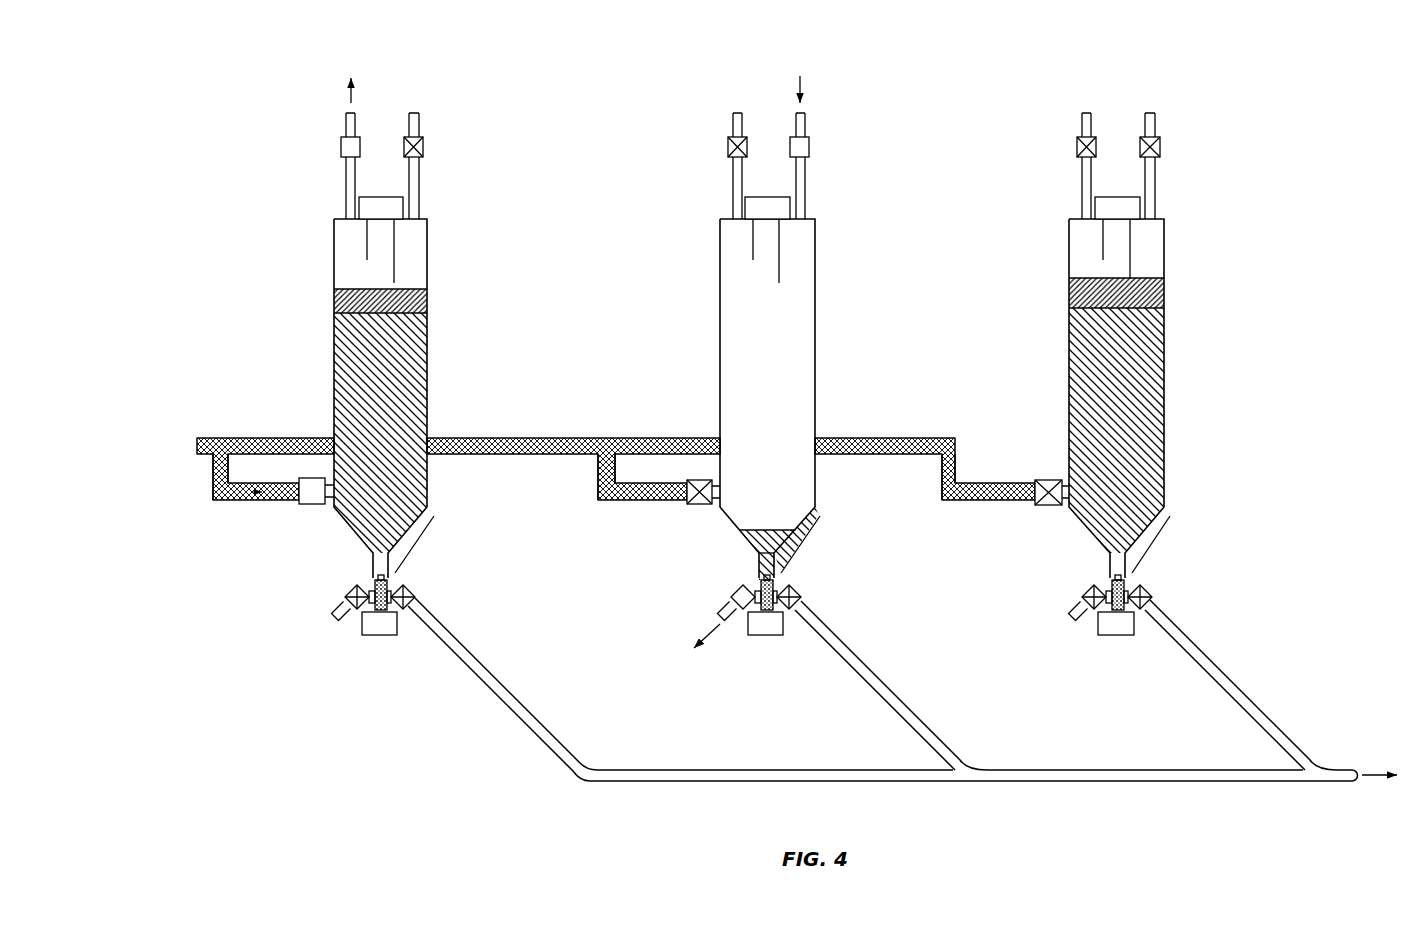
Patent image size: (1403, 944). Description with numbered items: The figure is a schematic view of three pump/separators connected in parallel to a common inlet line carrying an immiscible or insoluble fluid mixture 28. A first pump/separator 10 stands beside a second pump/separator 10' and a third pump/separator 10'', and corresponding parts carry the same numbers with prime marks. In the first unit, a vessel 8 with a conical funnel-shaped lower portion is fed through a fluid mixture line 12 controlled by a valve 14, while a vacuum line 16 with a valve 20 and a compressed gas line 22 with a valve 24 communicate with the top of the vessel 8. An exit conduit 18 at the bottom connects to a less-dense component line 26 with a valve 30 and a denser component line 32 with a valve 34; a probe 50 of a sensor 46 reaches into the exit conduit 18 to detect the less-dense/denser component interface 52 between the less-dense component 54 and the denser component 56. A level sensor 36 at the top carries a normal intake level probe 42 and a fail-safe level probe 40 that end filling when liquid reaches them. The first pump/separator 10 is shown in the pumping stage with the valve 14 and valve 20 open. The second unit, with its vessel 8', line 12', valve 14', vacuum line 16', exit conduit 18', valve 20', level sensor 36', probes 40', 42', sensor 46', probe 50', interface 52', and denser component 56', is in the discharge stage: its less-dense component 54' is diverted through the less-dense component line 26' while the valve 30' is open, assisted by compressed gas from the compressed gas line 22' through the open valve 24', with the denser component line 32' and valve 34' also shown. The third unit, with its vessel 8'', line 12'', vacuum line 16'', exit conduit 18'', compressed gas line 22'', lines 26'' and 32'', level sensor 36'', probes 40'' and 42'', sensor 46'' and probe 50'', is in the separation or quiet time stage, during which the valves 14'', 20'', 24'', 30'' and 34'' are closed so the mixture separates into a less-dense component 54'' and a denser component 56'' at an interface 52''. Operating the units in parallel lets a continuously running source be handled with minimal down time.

The vessel 8 is at (346, 398).
The pump/separator 10 is at (773, 429).
The immiscible or insoluble fluid mixture line 12 is at (237, 499).
The valve 14 is at (303, 505).
The vacuum line 16 is at (323, 148).
The exit conduit 18 is at (332, 571).
The valve 20 is at (324, 149).
The compressed gas line 22 is at (443, 166).
The valve 24 is at (440, 149).
The less-dense component line 26 is at (317, 615).
The immiscible or insoluble fluid mixture 28 is at (196, 446).
The valve 30 is at (322, 580).
The denser component line 32 is at (880, 689).
The valve 34 is at (433, 570).
The level sensor 36 is at (381, 156).
The fail-safe level probe 40 is at (315, 243).
The normal intake level probe 42 is at (329, 254).
The sensor 46 is at (365, 648).
The probe 50 is at (435, 541).
The less-dense/denser component interface 52 is at (339, 305).
The less-dense component 54 is at (417, 309).
The denser component 56 is at (417, 433).
The vessel 8' is at (730, 398).
The pump/separator 10' is at (950, 423).
The immiscible or insoluble fluid mixture line 12' is at (616, 499).
The valve 14' is at (686, 506).
The vacuum line 16' is at (708, 166).
The exit conduit 18' is at (714, 571).
The valve 20' is at (709, 149).
The compressed gas line 22' is at (832, 147).
The valve 24' is at (829, 149).
The less-dense component line 26' is at (701, 625).
The valve 30' is at (703, 592).
The denser component line 32' is at (1049, 685).
The valve 34' is at (822, 591).
The level sensor 36' is at (767, 156).
The fail-safe level probe 40' is at (699, 243).
The normal intake level probe 42' is at (712, 254).
The sensor 46' is at (746, 648).
The probe 50' is at (736, 542).
The less-dense/denser component interface 52' is at (813, 548).
The less-dense component 54' is at (804, 506).
The denser component 56' is at (804, 555).
The vessel 8'' is at (1084, 398).
The pump/separator 10'' is at (1169, 437).
The immiscible or insoluble fluid mixture line 12'' is at (963, 500).
The valve 14'' is at (1040, 469).
The vacuum line 16'' is at (1053, 166).
The exit conduit 18'' is at (1063, 566).
The valve 20'' is at (1055, 149).
The compressed gas line 22'' is at (1182, 166).
The valve 24'' is at (1176, 149).
The less-dense component line 26'' is at (1050, 615).
The valve 30'' is at (1055, 581).
The denser component line 32'' is at (1271, 690).
The valve 34'' is at (1173, 572).
The level sensor 36'' is at (1119, 156).
The fail-safe level probe 40'' is at (1045, 239).
The normal intake level probe 42'' is at (1059, 251).
The sensor 46'' is at (1101, 648).
The probe 50'' is at (1176, 541).
The less-dense/denser component interface 52'' is at (1076, 299).
The less-dense component 54'' is at (1156, 291).
The denser component 56'' is at (1156, 430).